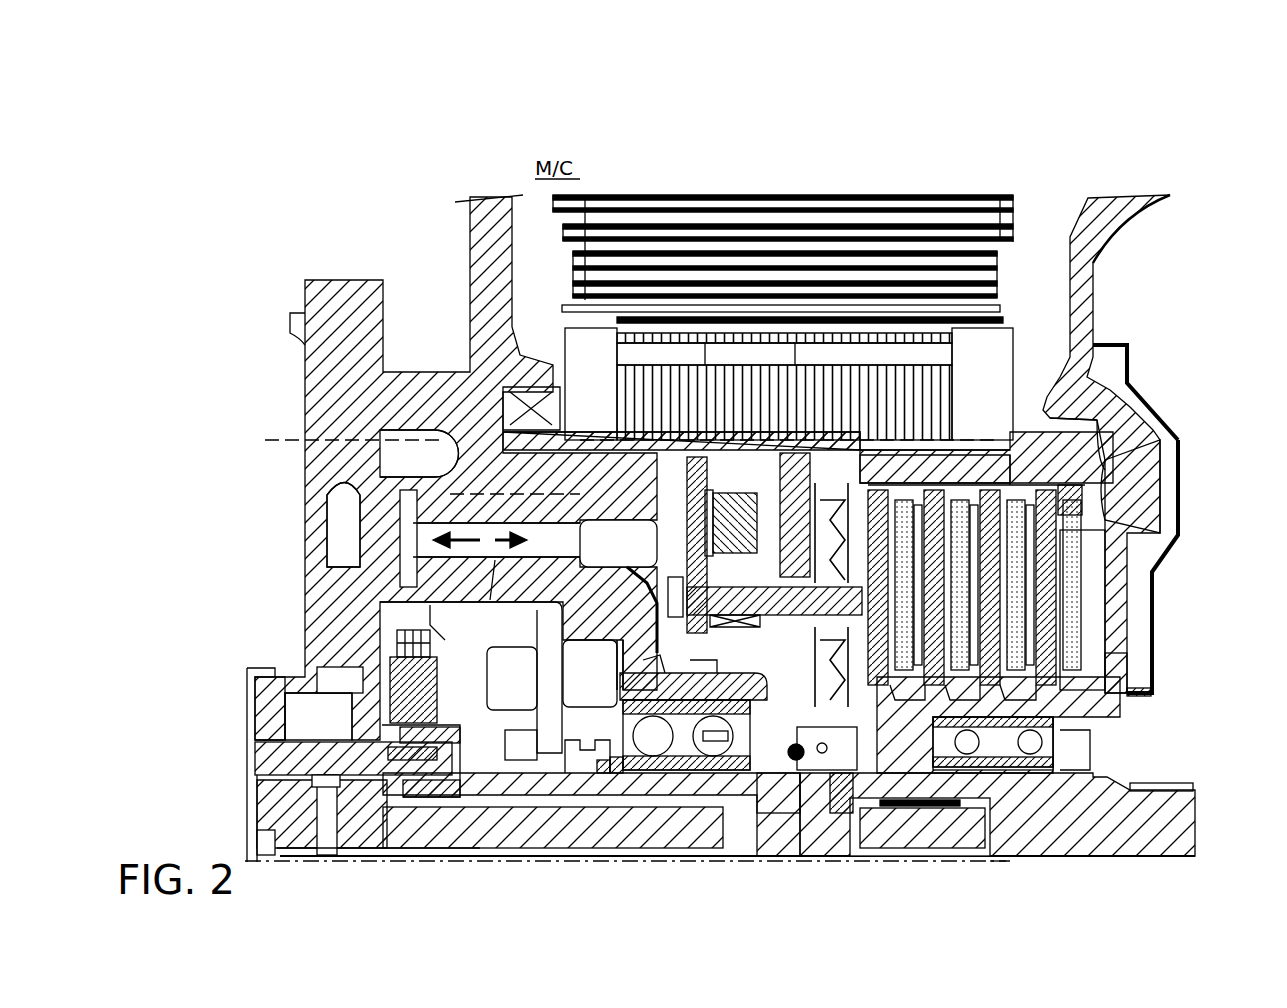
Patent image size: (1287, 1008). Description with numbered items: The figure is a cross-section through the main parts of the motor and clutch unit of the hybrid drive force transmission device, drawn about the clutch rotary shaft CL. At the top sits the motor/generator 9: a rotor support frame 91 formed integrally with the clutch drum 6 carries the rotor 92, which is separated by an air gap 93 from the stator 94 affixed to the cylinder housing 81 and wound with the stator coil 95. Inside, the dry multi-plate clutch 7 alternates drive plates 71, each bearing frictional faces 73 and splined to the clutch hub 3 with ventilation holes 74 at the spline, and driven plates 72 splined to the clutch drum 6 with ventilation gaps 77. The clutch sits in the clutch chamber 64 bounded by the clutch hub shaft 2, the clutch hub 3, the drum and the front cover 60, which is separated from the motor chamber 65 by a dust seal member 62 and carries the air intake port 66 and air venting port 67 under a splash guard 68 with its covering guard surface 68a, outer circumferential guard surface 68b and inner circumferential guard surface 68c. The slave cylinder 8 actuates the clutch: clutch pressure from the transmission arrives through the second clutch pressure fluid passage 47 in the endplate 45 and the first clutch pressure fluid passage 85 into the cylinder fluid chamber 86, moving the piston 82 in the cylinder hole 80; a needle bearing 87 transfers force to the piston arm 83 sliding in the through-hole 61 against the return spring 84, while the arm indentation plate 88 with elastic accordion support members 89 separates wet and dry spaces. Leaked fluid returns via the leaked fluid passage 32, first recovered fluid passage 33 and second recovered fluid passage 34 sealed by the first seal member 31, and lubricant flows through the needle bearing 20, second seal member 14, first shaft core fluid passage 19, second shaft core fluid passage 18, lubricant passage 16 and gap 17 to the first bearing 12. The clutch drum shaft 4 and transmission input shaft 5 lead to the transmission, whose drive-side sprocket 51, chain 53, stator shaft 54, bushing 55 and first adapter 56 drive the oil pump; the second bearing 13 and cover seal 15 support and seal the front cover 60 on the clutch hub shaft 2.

The clutch hub shaft 2 is at (1093, 827).
The clutch hub 3 is at (1060, 700).
The clutch drum shaft 4 is at (695, 790).
The transmission input shaft 5 is at (550, 830).
The clutch drum 6 is at (990, 455).
The dry multi-plate clutch 7 is at (1043, 577).
The slave cylinder 8 is at (520, 608).
The motor/generator 9 is at (783, 273).
The first bearing 12 is at (650, 735).
The second bearing 13 is at (1040, 745).
The second seal member 14 is at (830, 765).
The cover seal 15 is at (1090, 755).
The lubricant passage 16 is at (775, 780).
The gap 17 is at (890, 810).
The second shaft core fluid passage 18 is at (930, 855).
The first shaft core fluid passage 19 is at (462, 866).
The needle bearing 20 is at (840, 812).
The first seal member 31 is at (530, 392).
The leaked fluid passage 32 is at (860, 455).
The first recovered fluid passage 33 is at (455, 465).
The second recovered fluid passage 34 is at (617, 461).
The endplate 45 is at (345, 386).
The second clutch pressure fluid passage 47 is at (327, 545).
The drive-side sprocket 51 is at (290, 705).
The chain 53 is at (395, 635).
The stator shaft 54 is at (300, 750).
The bushing 55 is at (395, 800).
The first adapter 56 is at (430, 800).
The front cover 60 is at (1085, 385).
The through-hole 61 is at (790, 625).
The dust seal member 62 is at (1090, 417).
The clutch chamber 64 is at (1090, 635).
The motor chamber 65 is at (1033, 290).
The air intake port 66 is at (1113, 660).
The air venting port 67 is at (1125, 480).
The splash guard 68 is at (1183, 483).
The covering guard surface 68a is at (1181, 500).
The outer circumferential guard surface 68b is at (1120, 348).
The inner circumferential guard surface 68c is at (1152, 692).
The drive plate 71 is at (1040, 580).
The driven plate 72 is at (1030, 525).
The frictional face 73 is at (1040, 545).
The ventilation holes 74 is at (1150, 690).
The ventilation gaps 77 is at (1090, 520).
The cylinder hole 80 is at (660, 500).
The cylinder housing 81 is at (445, 595).
The piston 82 is at (640, 650).
The piston arm 83 is at (720, 605).
The return spring 84 is at (740, 495).
The first clutch pressure fluid passage 85 is at (490, 560).
The cylinder fluid chamber 86 is at (593, 533).
The needle bearing 87 is at (628, 616).
The arm indentation plate 88 is at (850, 600).
The elastic accordion support members 89 is at (796, 760).
The rotor support frame 91 is at (585, 340).
The rotor 92 is at (745, 380).
The air gap 93 is at (800, 345).
The stator 94 is at (845, 335).
The stator coil 95 is at (665, 135).
The clutch rotary shaft CL is at (1010, 862).